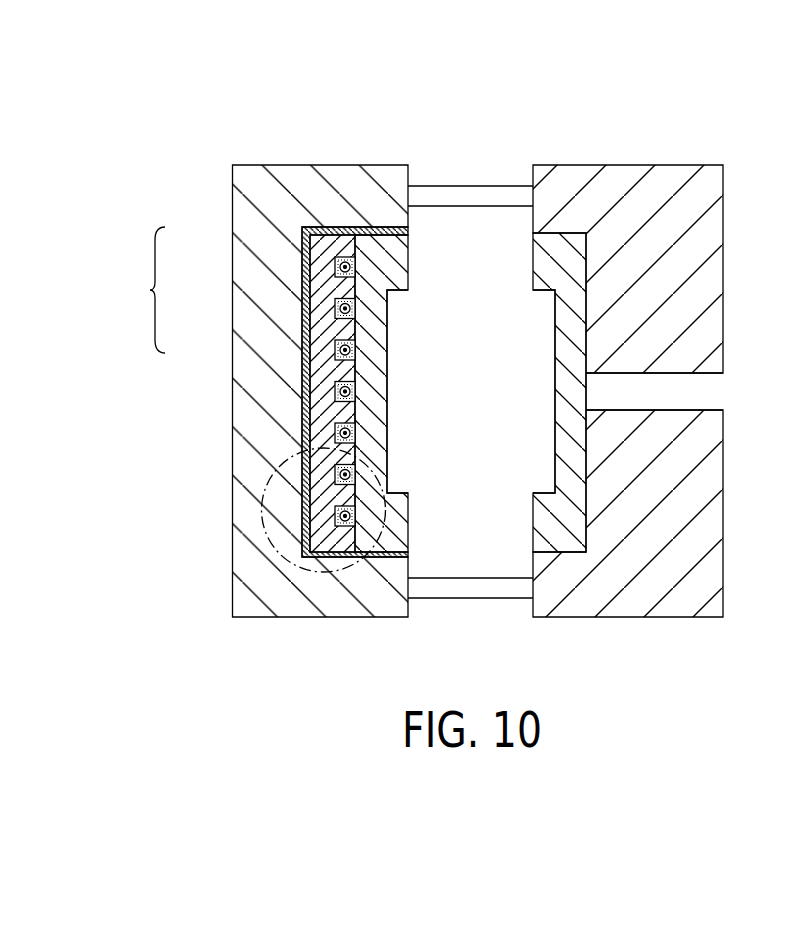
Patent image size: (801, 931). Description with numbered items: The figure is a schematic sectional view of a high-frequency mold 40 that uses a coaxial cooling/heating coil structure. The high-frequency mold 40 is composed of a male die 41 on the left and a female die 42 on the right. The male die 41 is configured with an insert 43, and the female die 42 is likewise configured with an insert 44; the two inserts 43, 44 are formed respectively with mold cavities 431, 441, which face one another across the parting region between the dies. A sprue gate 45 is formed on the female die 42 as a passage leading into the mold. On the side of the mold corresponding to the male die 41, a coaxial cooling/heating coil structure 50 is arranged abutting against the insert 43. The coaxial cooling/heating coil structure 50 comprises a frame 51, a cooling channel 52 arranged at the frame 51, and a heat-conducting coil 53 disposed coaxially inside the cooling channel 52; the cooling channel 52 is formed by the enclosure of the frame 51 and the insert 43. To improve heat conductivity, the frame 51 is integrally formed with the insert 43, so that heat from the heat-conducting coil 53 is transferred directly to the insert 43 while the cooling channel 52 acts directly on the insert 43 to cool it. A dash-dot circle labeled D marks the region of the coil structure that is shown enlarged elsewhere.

The high-frequency mold 40 is at (447, 62).
The male die 41 is at (298, 172).
The female die 42 is at (630, 172).
The insert 43 is at (402, 517).
The mold cavity 431 is at (402, 401).
The insert 44 is at (541, 517).
The mold cavity 441 is at (541, 401).
The sprue gate 45 is at (717, 390).
The coaxial cooling/heating coil structure 50 is at (139, 290).
The frame 51 is at (313, 241).
The cooling channel 52 is at (335, 300).
The heat-conducting coil 53 is at (317, 328).
The detail region D is at (292, 565).